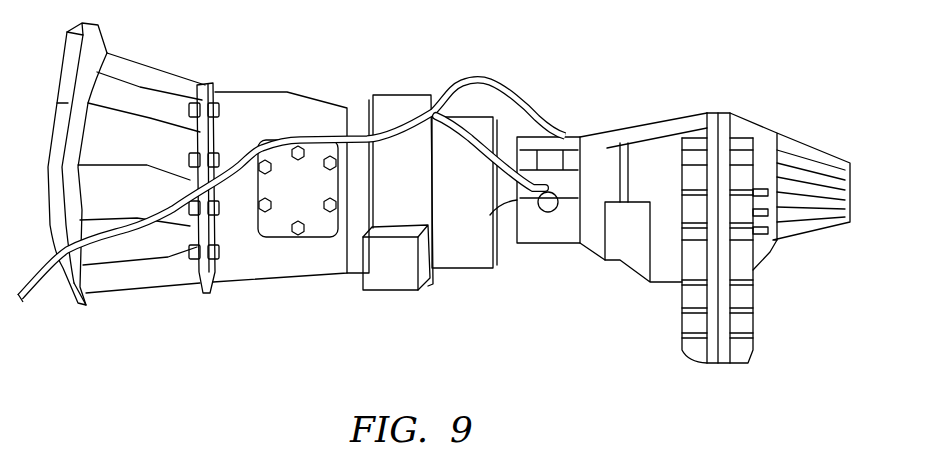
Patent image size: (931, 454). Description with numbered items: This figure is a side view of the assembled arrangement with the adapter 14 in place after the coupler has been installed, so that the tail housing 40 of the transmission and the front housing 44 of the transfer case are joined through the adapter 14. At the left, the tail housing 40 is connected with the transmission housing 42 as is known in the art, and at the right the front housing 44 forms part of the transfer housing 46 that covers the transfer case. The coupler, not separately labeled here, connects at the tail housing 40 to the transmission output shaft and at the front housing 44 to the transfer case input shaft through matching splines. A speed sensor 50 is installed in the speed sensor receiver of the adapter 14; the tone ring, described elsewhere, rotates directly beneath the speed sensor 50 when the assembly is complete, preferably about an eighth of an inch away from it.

The adapter 14 is at (560, 232).
The tail housing 40 is at (396, 103).
The transmission housing 42 is at (178, 88).
The front housing 44 is at (597, 147).
The transfer housing 46 is at (695, 123).
The speed sensor 50 is at (548, 208).